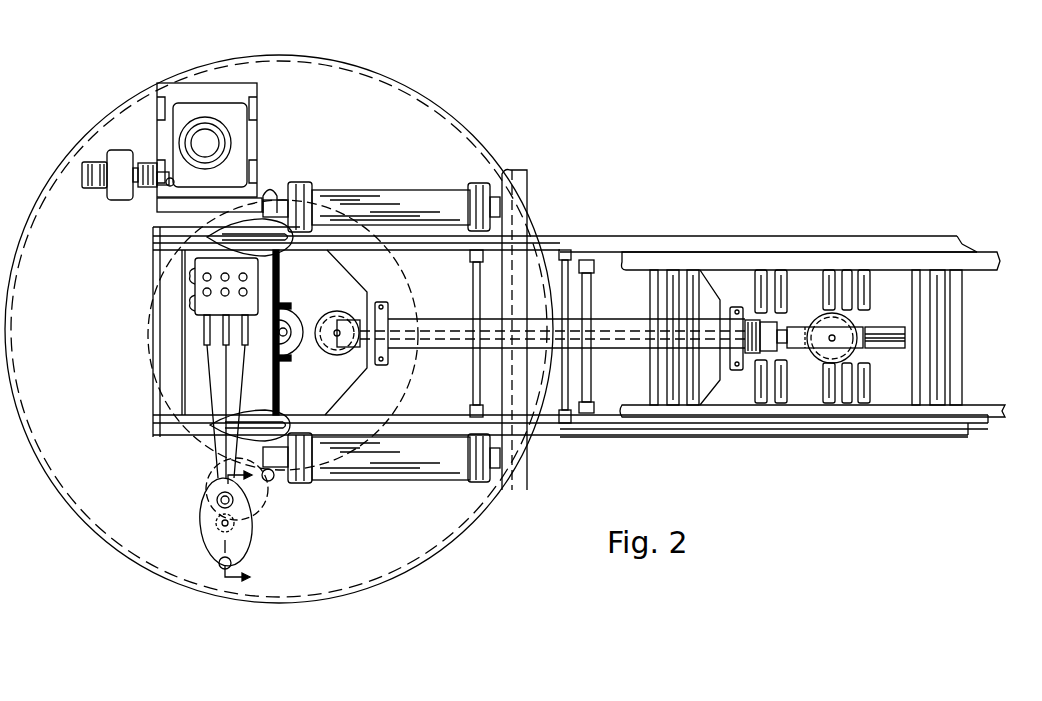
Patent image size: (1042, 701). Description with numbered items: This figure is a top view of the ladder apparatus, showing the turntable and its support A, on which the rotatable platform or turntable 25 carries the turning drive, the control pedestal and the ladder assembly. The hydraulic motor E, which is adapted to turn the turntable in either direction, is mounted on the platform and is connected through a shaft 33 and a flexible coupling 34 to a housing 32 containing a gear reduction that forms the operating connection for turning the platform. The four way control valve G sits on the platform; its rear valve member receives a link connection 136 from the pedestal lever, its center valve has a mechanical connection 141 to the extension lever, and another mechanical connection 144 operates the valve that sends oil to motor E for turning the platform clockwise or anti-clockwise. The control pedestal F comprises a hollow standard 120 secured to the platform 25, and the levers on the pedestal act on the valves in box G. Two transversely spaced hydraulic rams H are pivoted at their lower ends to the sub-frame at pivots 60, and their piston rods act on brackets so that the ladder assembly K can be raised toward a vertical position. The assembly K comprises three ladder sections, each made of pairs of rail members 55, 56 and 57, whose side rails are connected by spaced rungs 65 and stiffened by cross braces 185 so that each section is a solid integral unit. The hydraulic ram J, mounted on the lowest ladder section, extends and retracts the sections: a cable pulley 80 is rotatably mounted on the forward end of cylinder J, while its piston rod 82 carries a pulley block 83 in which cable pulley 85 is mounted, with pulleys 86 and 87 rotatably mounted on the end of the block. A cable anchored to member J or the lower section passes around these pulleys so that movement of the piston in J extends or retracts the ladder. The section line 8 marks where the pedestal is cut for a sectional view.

The turntable and its support A is at (467, 543).
The platform or turntable 25 is at (283, 382).
The housing 32 is at (185, 108).
The shaft 33 is at (170, 187).
The flexible coupling 34 is at (148, 162).
The hydraulic motor E is at (92, 192).
The four way control valve G is at (195, 285).
The mechanical connection 144 is at (204, 343).
The mechanical connection 141 is at (205, 372).
The link connection 136 is at (275, 370).
The cable pulley 80 is at (332, 357).
The cross braces 185 is at (336, 380).
The hydraulic ram J is at (448, 313).
The pivot 60 is at (503, 172).
The hydraulic rams H is at (357, 186).
The control pedestal F is at (248, 532).
The hollow standard 120 is at (198, 522).
The section line 8- 8 is at (243, 527).
The piston rod 82 is at (778, 333).
The pulley block 83 is at (798, 348).
The cable pulley 85 is at (823, 355).
The pulley 86 is at (905, 348).
The pulley 87 is at (905, 328).
The rungs 65 is at (963, 296).
The rail member 57 is at (975, 404).
The rail member 56 is at (972, 430).
The rail member 55 is at (855, 437).
The ladder sections K is at (760, 442).